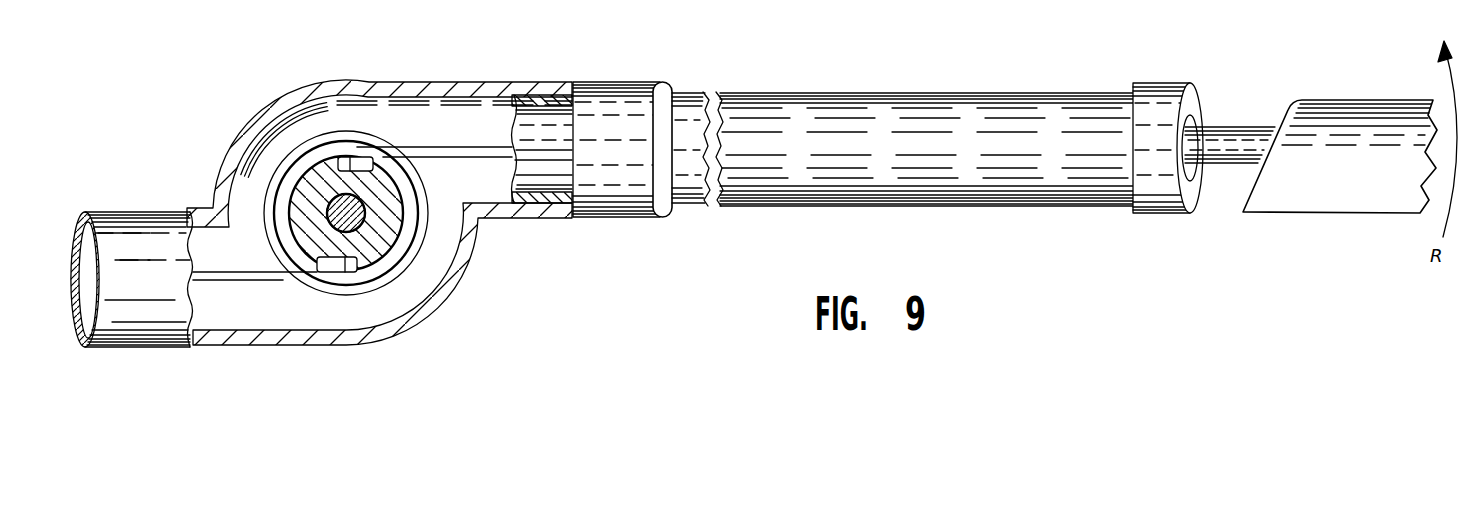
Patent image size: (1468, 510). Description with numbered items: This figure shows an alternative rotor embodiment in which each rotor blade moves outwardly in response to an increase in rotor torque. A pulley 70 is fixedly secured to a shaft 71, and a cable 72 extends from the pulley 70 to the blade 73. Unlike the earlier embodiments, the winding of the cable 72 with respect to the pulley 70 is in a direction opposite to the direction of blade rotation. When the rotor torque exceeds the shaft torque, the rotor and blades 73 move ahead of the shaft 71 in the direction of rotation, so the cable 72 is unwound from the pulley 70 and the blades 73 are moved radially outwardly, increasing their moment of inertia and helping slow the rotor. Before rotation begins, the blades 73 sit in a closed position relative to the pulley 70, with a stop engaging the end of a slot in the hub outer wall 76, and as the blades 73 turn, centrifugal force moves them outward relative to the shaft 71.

The pulley 70 is at (382, 247).
The shaft 71 is at (366, 218).
The cable 72 is at (221, 282).
The blade 73 is at (1313, 203).
The hub outer wall 76 is at (633, 219).